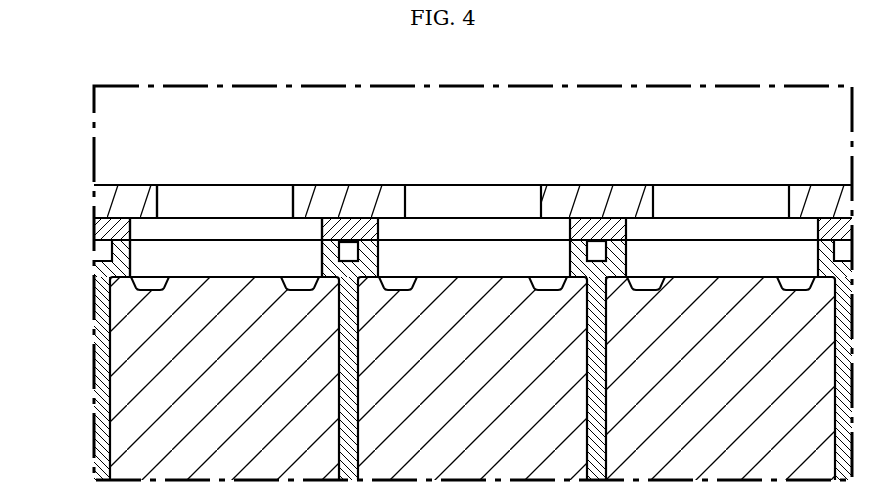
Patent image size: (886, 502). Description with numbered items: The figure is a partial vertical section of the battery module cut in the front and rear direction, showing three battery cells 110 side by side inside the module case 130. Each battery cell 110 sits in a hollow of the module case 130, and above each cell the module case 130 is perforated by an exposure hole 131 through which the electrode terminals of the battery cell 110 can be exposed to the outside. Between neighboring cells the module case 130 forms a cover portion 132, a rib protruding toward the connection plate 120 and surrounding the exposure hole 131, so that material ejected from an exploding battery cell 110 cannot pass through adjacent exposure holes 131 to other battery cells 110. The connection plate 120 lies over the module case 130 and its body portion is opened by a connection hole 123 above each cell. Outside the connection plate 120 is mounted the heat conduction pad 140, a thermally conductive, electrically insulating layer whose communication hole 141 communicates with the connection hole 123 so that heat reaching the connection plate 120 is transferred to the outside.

The battery cell 110 is at (477, 306).
The connection plate 120 is at (94, 226).
The connection hole 123 is at (189, 225).
The module case 130 is at (94, 262).
The exposure hole 131 is at (277, 251).
The cover portion 132 is at (350, 238).
The heat conduction pad 140 is at (94, 204).
The communication hole 141 is at (238, 197).